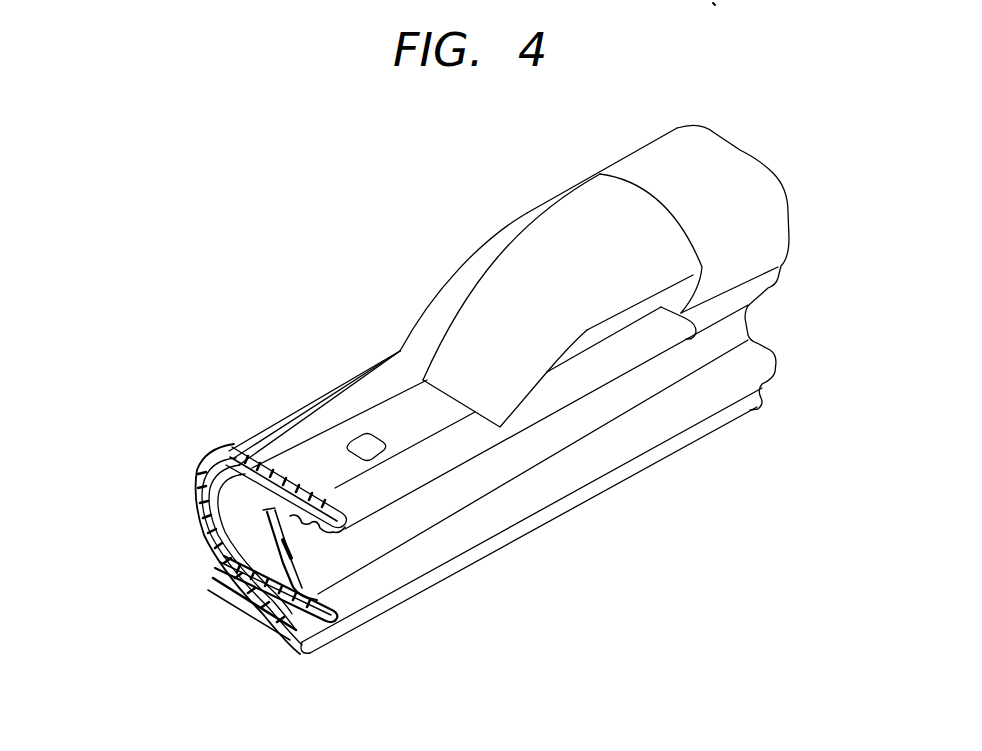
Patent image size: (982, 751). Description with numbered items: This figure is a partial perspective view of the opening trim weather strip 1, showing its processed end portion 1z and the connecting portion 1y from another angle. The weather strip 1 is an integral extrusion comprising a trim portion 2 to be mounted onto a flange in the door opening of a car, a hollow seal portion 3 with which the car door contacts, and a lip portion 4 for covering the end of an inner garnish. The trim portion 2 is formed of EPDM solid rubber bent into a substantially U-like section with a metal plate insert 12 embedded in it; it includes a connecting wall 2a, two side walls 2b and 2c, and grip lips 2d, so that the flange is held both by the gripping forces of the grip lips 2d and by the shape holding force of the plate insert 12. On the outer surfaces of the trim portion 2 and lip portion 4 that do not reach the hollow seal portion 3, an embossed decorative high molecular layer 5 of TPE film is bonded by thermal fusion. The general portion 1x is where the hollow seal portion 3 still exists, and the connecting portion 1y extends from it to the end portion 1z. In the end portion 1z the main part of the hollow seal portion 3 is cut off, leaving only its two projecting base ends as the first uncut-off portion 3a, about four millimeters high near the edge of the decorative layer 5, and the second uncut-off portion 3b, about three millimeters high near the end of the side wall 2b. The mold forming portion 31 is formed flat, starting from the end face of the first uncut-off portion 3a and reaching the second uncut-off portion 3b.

The opening trim weather strip 1 is at (713, 442).
The general portion 1x is at (613, 161).
The connecting portion 1y is at (453, 263).
The end portion 1z is at (318, 389).
The trim portion 2 is at (207, 505).
The connecting wall 2a is at (195, 518).
The side wall 2b is at (247, 453).
The side wall 2c is at (323, 610).
The grip lips 2d is at (287, 532).
The hollow seal portion 3 is at (781, 212).
The first uncut-off portion 3a is at (297, 433).
The second uncut-off portion 3b is at (436, 488).
The mold forming portion 31 is at (405, 403).
The lip portion 4 is at (256, 604).
The decorative high molecular layer 5 is at (212, 462).
The metal plate insert 12 is at (317, 588).